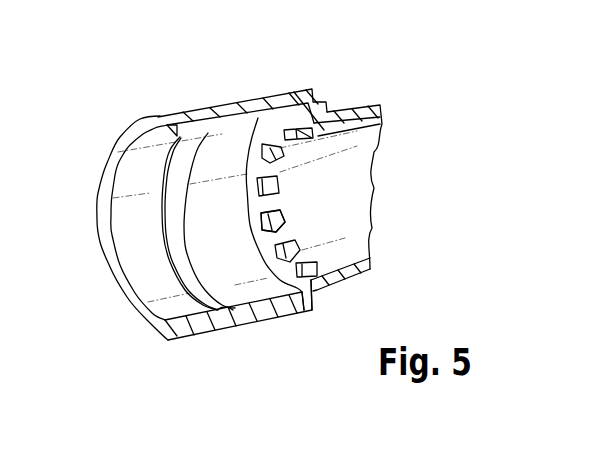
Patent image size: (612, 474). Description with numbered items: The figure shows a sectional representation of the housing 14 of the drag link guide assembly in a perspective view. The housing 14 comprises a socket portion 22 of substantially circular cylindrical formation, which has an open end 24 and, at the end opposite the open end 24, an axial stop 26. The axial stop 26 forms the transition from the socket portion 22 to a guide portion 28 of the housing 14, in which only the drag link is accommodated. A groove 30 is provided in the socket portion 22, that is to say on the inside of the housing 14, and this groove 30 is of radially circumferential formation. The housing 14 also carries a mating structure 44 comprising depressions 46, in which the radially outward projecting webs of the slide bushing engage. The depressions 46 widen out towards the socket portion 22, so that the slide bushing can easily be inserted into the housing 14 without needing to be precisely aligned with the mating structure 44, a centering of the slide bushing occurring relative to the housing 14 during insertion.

The housing 14 is at (232, 197).
The socket portion 22 is at (267, 110).
The open end 24 is at (147, 245).
The axial stop 26 is at (315, 280).
The guide portion 28 is at (353, 150).
The groove 30 is at (248, 325).
The mating structure 44 is at (289, 208).
The depressions 46 is at (284, 253).